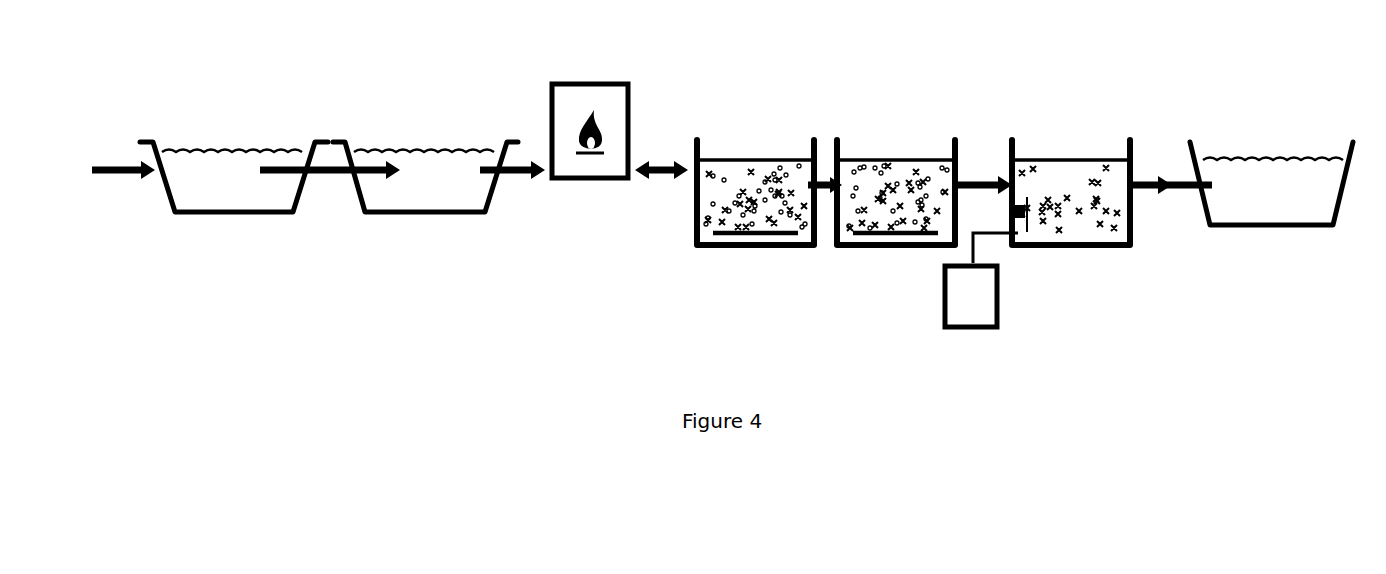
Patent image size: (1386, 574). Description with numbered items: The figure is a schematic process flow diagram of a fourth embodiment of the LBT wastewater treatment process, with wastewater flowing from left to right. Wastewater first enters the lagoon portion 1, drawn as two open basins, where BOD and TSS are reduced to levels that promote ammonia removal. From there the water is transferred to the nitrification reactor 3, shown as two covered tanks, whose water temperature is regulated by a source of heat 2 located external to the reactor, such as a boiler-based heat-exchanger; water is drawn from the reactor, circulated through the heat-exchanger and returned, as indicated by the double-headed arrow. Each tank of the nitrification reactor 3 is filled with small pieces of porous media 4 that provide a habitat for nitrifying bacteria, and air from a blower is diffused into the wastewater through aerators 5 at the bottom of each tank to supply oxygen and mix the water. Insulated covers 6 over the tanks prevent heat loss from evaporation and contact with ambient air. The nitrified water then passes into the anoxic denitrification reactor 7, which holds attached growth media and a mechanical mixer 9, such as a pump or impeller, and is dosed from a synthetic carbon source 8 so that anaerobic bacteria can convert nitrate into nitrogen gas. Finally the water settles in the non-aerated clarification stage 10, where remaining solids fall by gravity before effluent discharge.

The lagoon portion 1 is at (233, 198).
The source of heat 2 is at (590, 185).
The nitrification reactor 3 is at (910, 250).
The porous media 4 is at (1050, 180).
The aerators 5 is at (765, 240).
The insulated covers 6 is at (1077, 153).
The denitrification reactor 7 is at (1062, 287).
The carbon source 8 is at (981, 280).
The mechanical mixer 9 is at (1027, 232).
The clarification stage 10 is at (1290, 207).